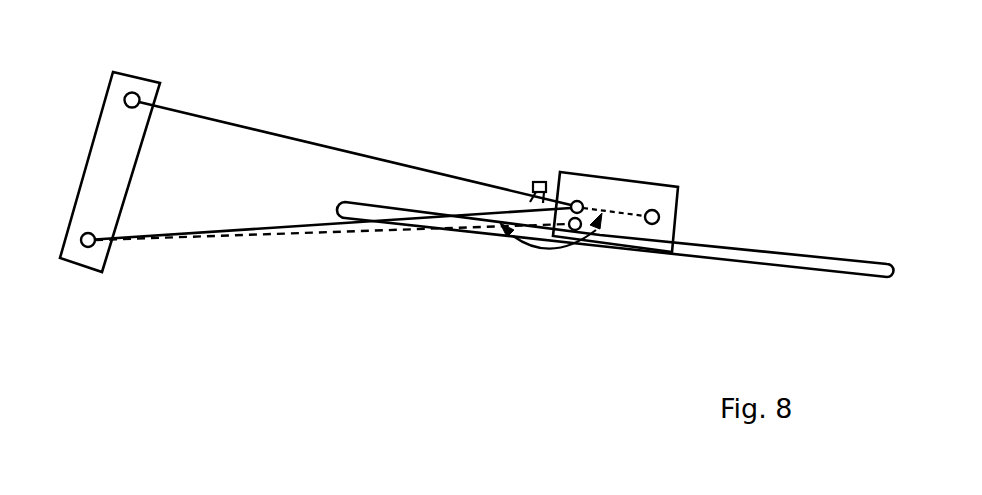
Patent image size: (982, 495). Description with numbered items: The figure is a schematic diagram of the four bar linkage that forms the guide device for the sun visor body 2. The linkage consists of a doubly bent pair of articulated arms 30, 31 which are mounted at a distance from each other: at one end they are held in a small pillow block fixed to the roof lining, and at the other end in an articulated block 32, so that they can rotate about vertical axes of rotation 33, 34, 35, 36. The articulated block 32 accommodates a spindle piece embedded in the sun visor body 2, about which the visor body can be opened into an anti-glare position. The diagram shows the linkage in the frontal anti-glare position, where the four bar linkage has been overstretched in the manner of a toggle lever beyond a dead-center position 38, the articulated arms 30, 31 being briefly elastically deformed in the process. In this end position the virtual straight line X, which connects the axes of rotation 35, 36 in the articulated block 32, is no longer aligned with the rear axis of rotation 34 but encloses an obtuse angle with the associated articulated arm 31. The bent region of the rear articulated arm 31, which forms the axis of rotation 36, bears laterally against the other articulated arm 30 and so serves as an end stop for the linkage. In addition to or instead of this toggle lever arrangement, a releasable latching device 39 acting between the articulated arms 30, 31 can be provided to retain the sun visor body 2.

The sun visor body 2 is at (840, 262).
The articulated arm 30 is at (313, 140).
The articulated arm 31 is at (210, 230).
The articulated block 32 is at (668, 212).
The axis of rotation 33 is at (133, 97).
The rear axis of rotation 34 is at (83, 253).
The axis of rotation 35 is at (663, 183).
The axis of rotation 36 is at (577, 200).
The dead-center position 38 is at (577, 232).
The releasable latching device 39 is at (538, 183).
The virtual straight line X is at (607, 200).